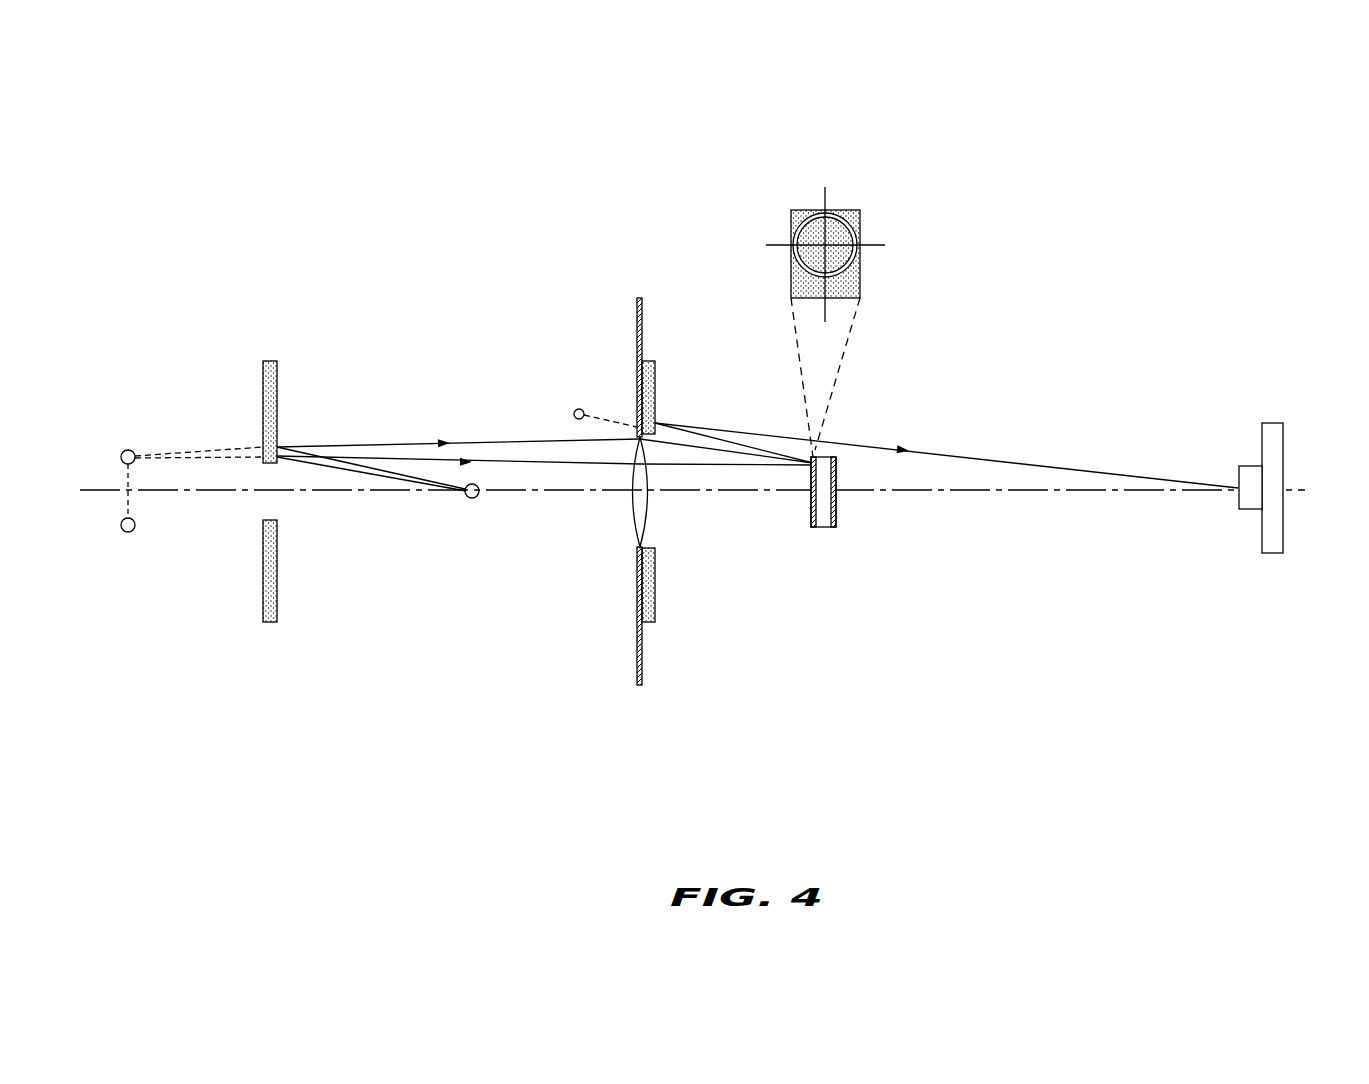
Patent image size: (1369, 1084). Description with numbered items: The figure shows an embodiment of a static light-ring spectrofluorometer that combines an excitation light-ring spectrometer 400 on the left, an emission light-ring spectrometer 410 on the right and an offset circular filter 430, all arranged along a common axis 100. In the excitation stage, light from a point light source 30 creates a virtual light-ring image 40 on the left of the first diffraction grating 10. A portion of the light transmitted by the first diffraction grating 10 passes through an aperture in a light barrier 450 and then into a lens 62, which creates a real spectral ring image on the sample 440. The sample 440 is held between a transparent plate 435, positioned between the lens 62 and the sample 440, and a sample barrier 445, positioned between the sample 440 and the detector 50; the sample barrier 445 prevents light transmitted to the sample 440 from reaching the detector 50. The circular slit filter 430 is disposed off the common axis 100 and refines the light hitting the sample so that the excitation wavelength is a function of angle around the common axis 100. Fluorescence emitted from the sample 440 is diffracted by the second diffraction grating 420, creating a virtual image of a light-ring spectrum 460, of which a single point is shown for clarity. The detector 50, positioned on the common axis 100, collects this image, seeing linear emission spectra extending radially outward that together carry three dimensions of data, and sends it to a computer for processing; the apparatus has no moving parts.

The first diffraction grating 10 is at (270, 361).
The point light source 30 is at (471, 498).
The virtual light-ring image 40 is at (131, 450).
The detector 50 is at (1273, 427).
The lens 62 is at (637, 517).
The common axis 100 is at (1047, 491).
The excitation light-ring spectrometer 400 is at (178, 726).
The emission light-ring spectrometer 410 is at (1244, 718).
The second diffraction grating 420 is at (657, 378).
The offset circular filter 430 is at (848, 213).
The transparent plate 435 is at (811, 515).
The sample 440 is at (826, 530).
The sample barrier 445 is at (836, 515).
The light barrier 450 is at (637, 658).
The virtual image of a light-ring spectrum 460 is at (578, 409).